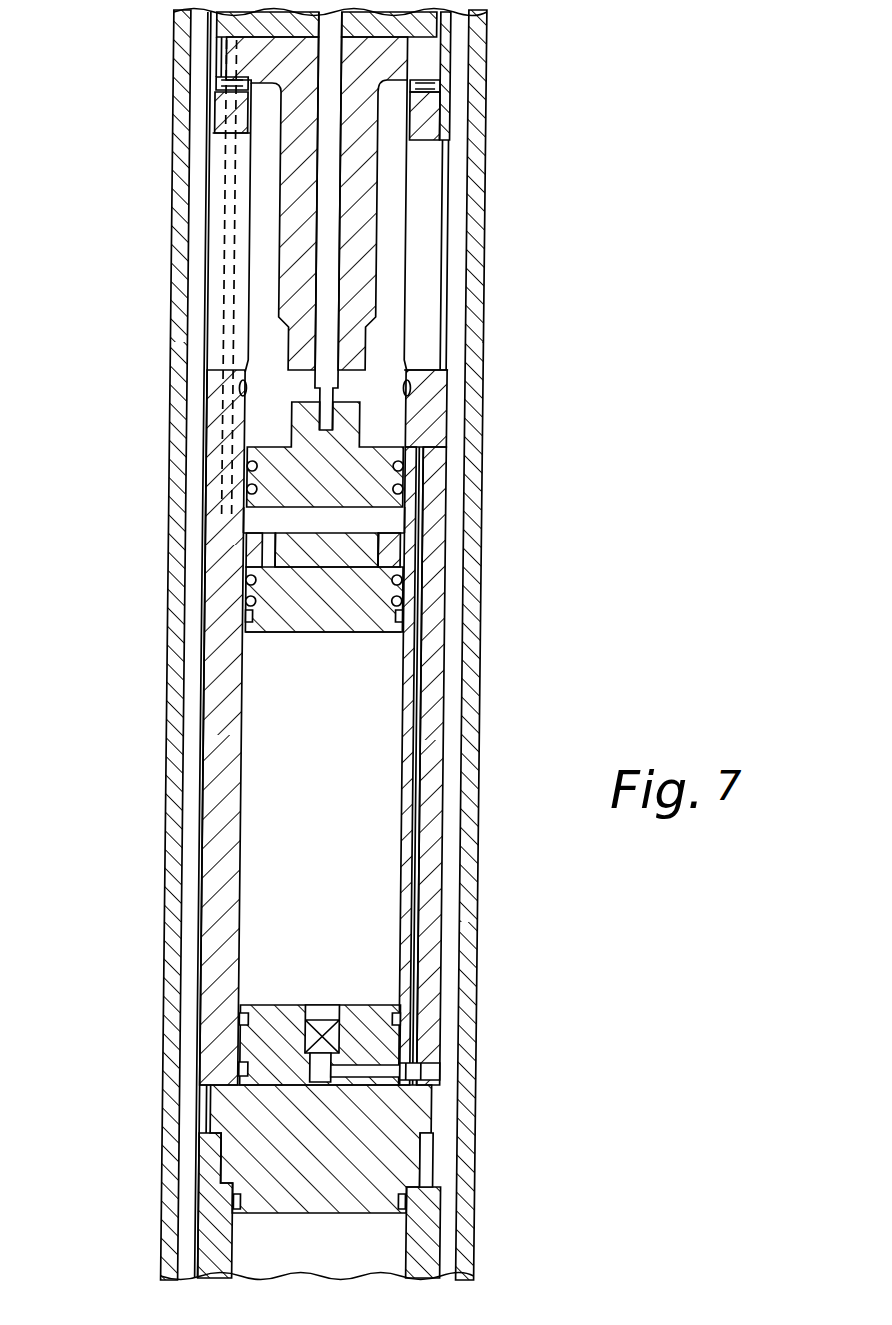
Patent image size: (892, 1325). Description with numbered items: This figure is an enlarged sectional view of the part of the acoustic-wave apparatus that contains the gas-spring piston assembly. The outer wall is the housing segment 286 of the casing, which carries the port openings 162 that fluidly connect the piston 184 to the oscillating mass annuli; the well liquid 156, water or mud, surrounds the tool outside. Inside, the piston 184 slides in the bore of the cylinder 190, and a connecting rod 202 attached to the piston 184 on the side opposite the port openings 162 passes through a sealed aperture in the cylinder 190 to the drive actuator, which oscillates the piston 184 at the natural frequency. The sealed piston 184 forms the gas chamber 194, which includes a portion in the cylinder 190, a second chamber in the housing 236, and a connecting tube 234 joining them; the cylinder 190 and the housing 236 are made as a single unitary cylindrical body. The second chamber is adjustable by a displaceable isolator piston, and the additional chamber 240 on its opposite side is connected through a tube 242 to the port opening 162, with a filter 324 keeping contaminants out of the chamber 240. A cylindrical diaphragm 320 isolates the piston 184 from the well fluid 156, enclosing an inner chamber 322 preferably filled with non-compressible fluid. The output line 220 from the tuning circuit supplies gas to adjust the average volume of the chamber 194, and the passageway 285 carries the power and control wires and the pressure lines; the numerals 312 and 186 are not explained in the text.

The liquid 156 is at (458, 45).
The passageway 285 is at (205, 35).
The tubular member 312 is at (445, 150).
The port openings 162 is at (452, 166).
The cylindrical diaphragm 320 is at (443, 230).
The connecting rod 202 is at (333, 293).
The inner chamber 322 is at (383, 297).
The output line 220 is at (220, 440).
The cylinder 190 is at (415, 435).
The piston 184 is at (410, 452).
The chamber 194 is at (420, 520).
The connecting tube 234 is at (420, 545).
The lower piston 186 is at (405, 570).
The housing 236 is at (412, 655).
The additional chamber 240 is at (412, 683).
The housing segment 286 is at (448, 908).
The filter 324 is at (340, 1038).
The tube 242 is at (360, 1066).